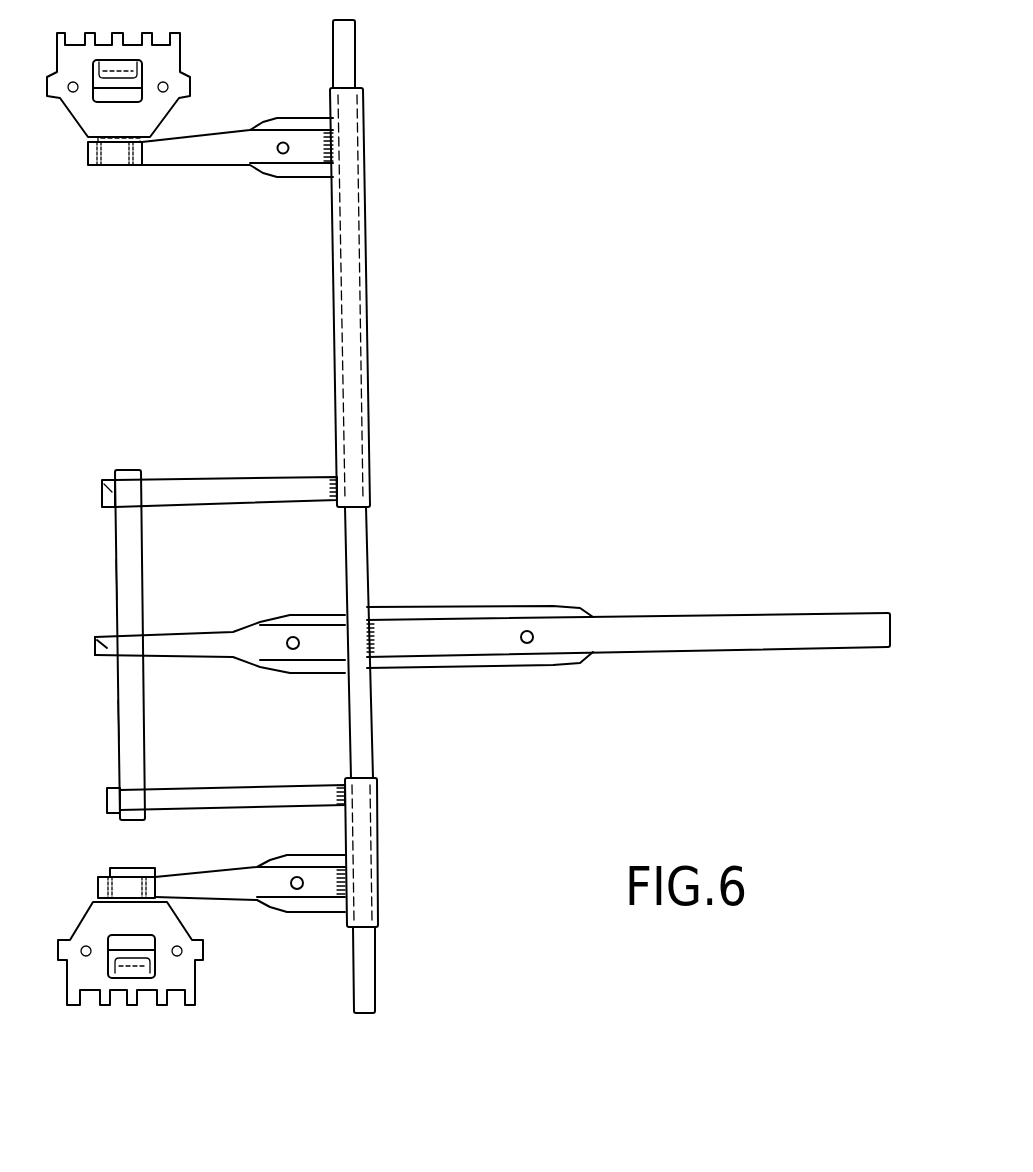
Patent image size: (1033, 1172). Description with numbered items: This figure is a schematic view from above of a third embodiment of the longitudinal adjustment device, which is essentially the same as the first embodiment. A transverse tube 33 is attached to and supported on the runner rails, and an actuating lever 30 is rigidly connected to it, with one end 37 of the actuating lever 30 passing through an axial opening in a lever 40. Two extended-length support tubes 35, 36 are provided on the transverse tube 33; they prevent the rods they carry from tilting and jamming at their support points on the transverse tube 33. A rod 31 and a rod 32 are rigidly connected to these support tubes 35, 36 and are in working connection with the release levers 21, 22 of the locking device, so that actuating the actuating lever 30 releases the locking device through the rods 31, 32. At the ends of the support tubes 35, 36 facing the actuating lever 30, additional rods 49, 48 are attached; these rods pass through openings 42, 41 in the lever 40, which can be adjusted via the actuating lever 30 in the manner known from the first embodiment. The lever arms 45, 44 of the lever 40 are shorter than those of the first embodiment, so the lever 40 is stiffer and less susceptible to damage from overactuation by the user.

The release lever 21 is at (107, 927).
The release lever 22 is at (87, 118).
The actuating lever 30 is at (723, 628).
The rod 31 is at (233, 885).
The rod 32 is at (182, 147).
The transverse tube 33 is at (352, 567).
The support tube 35 is at (358, 832).
The support tube 36 is at (348, 263).
The end of actuating lever 37 is at (95, 637).
The lever 40 is at (133, 553).
The opening 41 is at (107, 798).
The opening 42 is at (103, 480).
The lever arm 44 is at (117, 723).
The lever arm 45 is at (117, 583).
The additional rod 48 is at (243, 487).
The additional rod 49 is at (208, 800).